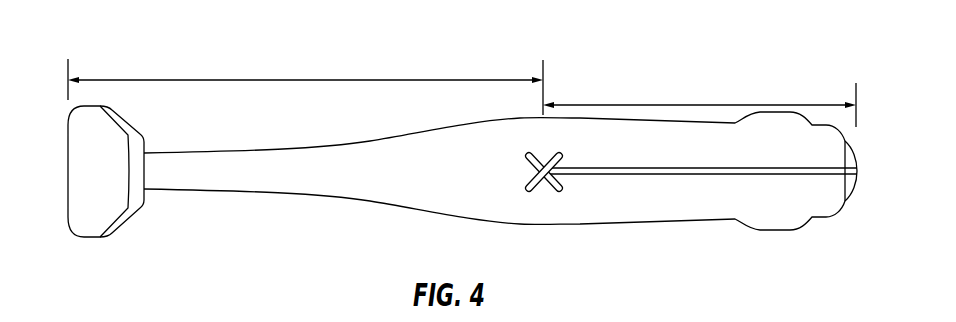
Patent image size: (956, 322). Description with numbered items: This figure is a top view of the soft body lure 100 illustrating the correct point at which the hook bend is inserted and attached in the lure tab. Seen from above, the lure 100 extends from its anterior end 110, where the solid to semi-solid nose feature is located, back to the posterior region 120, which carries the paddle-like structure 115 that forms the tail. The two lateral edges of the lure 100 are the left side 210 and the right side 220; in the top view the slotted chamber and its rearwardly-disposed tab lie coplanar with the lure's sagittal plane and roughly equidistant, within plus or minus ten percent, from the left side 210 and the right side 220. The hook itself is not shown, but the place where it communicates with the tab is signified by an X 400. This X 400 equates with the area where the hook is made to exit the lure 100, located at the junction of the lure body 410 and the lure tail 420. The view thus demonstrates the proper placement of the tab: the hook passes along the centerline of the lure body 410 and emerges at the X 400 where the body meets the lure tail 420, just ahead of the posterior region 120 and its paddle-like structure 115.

The soft body lure 100 is at (637, 50).
The anterior end 110 is at (928, 183).
The paddle-like structure 115 is at (117, 183).
The posterior region 120 is at (53, 183).
The left side 210 is at (546, 96).
The right side 220 is at (592, 258).
The X 400 is at (516, 168).
The lure body 410 is at (713, 103).
The lure tail 420 is at (318, 80).